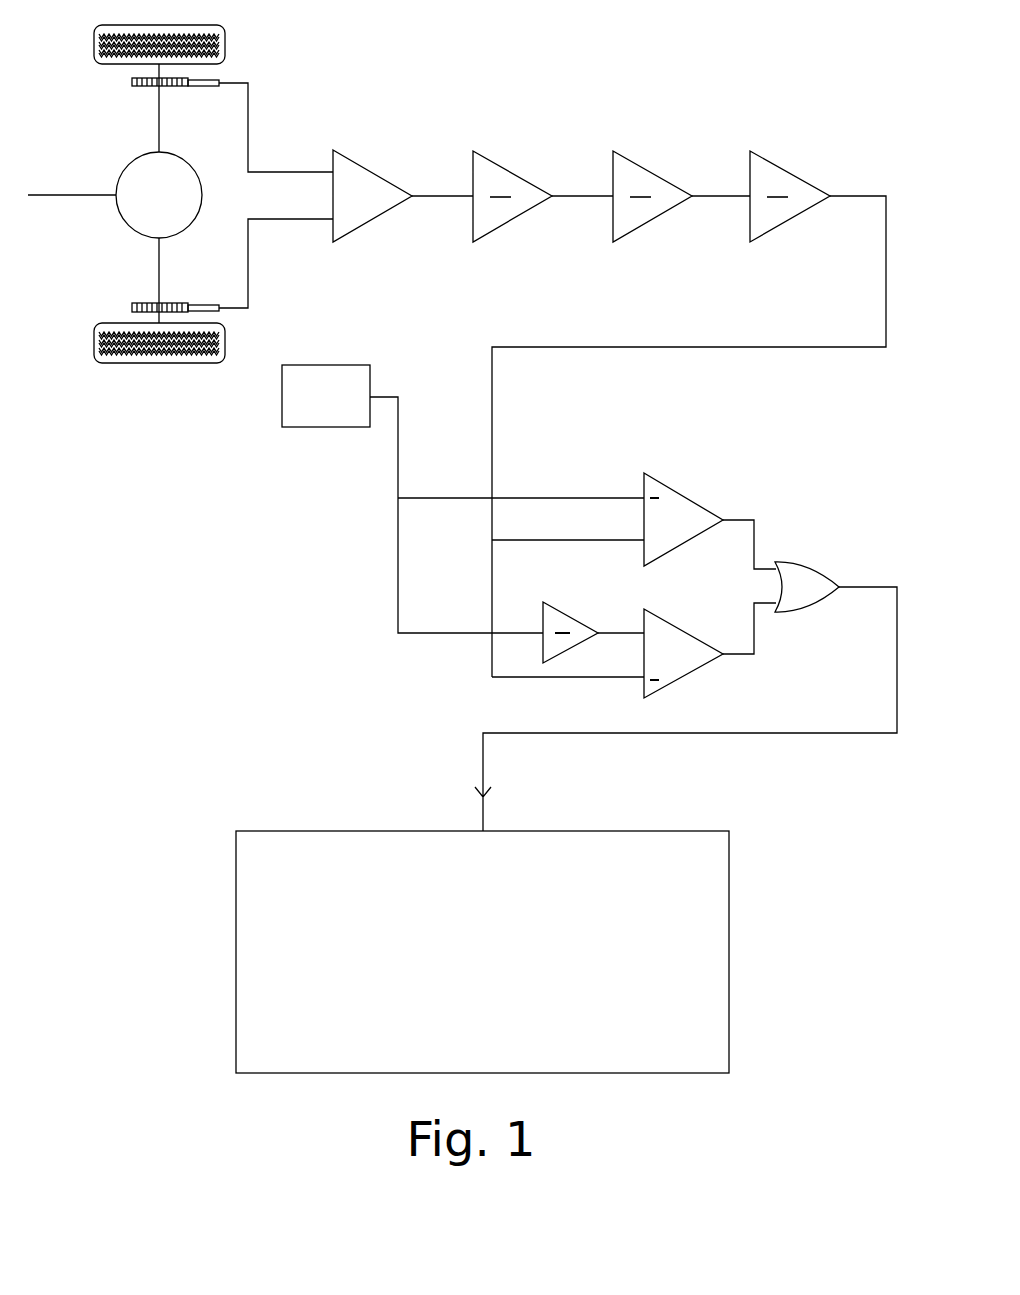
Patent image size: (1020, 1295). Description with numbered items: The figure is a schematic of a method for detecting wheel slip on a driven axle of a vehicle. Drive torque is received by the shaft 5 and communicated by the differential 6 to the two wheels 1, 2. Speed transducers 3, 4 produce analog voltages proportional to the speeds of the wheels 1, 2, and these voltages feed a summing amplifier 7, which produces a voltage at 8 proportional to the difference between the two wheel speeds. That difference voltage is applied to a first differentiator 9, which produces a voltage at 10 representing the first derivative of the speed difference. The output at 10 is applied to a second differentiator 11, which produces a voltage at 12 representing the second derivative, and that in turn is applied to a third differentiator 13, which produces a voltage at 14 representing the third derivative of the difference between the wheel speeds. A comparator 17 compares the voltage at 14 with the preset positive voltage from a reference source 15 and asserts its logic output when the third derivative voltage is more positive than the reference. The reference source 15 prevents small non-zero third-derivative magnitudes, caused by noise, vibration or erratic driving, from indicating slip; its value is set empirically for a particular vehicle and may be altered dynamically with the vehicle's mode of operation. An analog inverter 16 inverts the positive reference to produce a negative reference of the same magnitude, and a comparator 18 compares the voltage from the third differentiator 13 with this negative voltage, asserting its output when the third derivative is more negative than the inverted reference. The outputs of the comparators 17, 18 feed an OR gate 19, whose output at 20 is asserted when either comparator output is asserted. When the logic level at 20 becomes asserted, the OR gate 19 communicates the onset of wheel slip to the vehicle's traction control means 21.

The wheel 1 is at (215, 27).
The wheel 2 is at (214, 363).
The speed transducer 3 is at (213, 80).
The speed transducer 4 is at (192, 306).
The shaft 5 is at (69, 195).
The differential 6 is at (196, 166).
The summing amplifier 7 is at (346, 158).
The summing amplifier output voltage 8 is at (424, 196).
The first differentiator 9 is at (489, 160).
The first differentiator output voltage 10 is at (568, 196).
The second differentiator 11 is at (624, 158).
The second differentiator output voltage 12 is at (703, 196).
The third differentiator 13 is at (762, 158).
The third differentiator output voltage 14 is at (841, 196).
The reference source 15 is at (363, 368).
The analog inverter 16 is at (553, 605).
The comparator 17 is at (670, 490).
The comparator 18 is at (670, 621).
The OR gate 19 is at (790, 565).
The OR gate output 20 is at (851, 587).
The traction control means 21 is at (727, 836).